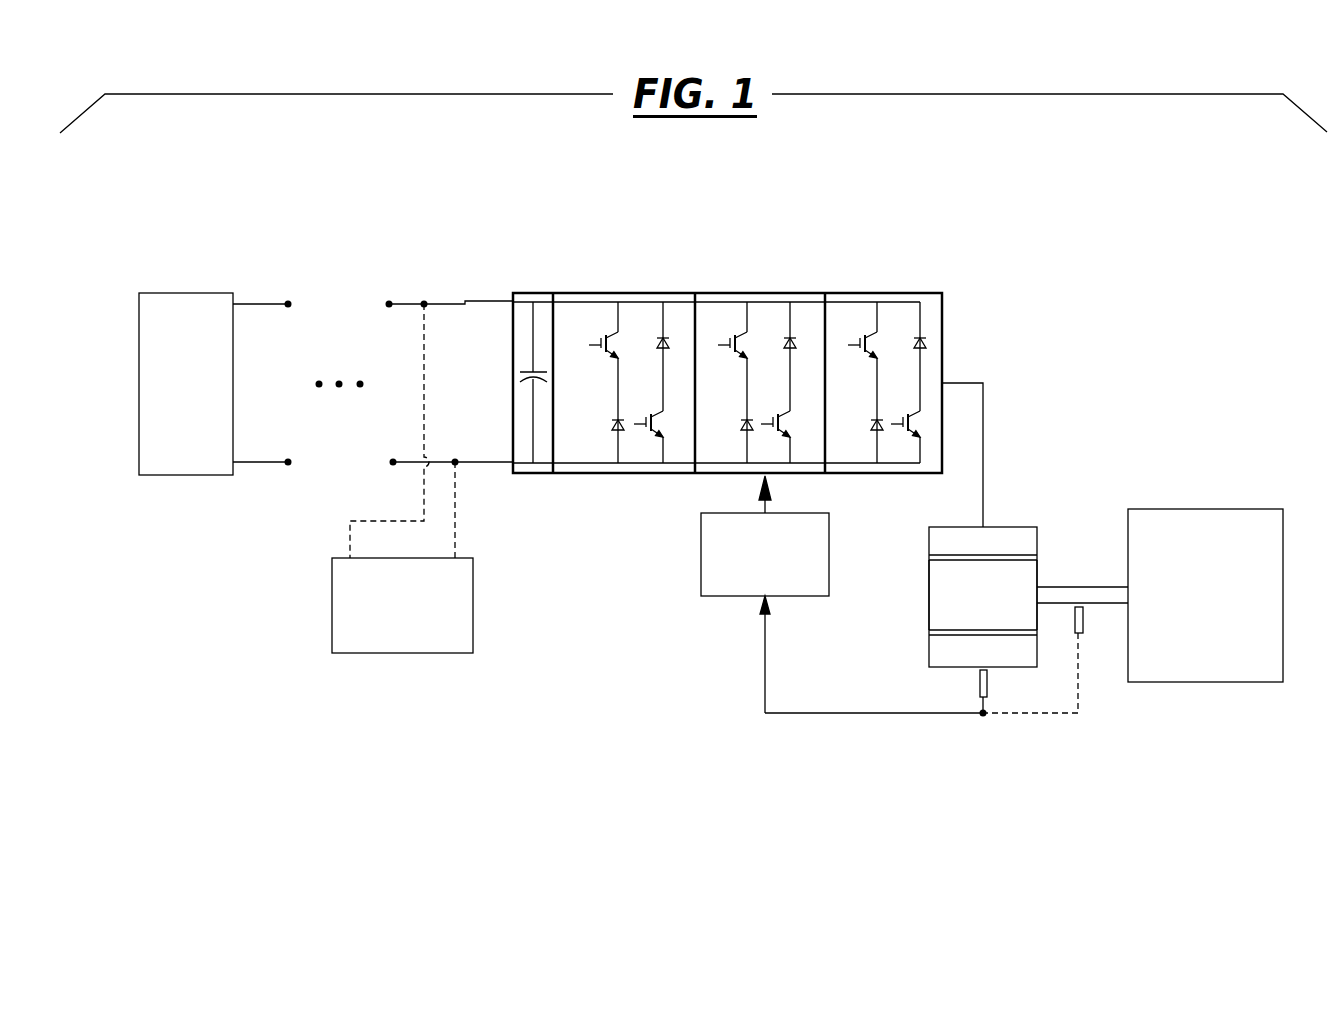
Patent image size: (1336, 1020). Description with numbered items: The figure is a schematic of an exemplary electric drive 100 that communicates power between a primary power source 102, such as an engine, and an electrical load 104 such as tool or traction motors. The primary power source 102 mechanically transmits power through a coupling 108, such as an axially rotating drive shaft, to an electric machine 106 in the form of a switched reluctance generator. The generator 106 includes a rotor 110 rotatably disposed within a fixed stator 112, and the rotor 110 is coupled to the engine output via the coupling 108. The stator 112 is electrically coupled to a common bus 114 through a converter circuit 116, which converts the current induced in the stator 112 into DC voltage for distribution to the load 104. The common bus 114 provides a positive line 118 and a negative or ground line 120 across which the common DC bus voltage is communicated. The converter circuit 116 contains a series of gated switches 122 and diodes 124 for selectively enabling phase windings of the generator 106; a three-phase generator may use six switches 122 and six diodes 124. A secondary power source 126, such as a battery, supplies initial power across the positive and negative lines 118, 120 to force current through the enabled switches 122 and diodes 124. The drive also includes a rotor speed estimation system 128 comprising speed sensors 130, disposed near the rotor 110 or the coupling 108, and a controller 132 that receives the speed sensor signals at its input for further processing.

The electric drive 100 is at (200, 683).
The primary power source 102 is at (1208, 528).
The electrical load 104 is at (163, 464).
The electric machine 106 is at (990, 560).
The coupling 108 is at (1063, 597).
The rotor 110 is at (938, 613).
The stator 112 is at (935, 543).
The common bus 114 is at (483, 242).
The converter circuit 116 is at (607, 475).
The positive line 118 is at (403, 304).
The negative line 120 is at (409, 462).
The switches 122 is at (867, 313).
The diodes 124 is at (930, 327).
The secondary power source 126 is at (357, 640).
The rotor speed estimation system 128 is at (592, 770).
The speed sensors 130 is at (987, 687).
The controller 132 is at (737, 582).